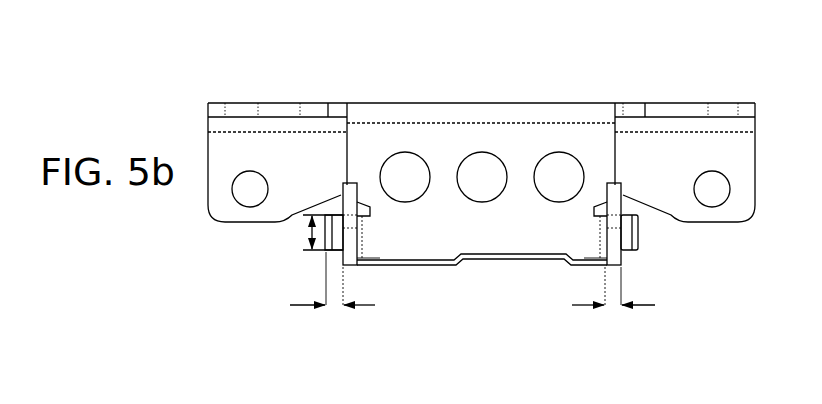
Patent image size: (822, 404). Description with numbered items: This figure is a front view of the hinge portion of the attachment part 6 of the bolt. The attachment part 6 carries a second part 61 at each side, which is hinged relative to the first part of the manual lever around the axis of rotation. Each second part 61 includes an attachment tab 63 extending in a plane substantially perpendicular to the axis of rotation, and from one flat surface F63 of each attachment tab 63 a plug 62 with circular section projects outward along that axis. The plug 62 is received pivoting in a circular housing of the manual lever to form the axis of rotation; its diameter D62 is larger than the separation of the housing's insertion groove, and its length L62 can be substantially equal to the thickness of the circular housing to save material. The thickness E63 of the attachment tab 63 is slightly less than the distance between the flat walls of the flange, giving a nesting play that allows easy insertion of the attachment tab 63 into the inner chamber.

The attachment part 6 is at (513, 273).
The second part 61 is at (368, 243).
The plug 62 is at (336, 207).
The attachment tab 63 is at (353, 185).
The flat surface of the attachment tab F63 is at (627, 192).
The diameter of the plug D62 is at (310, 234).
The length of the plug L62 is at (332, 298).
The thickness of the attachment tab E63 is at (640, 295).